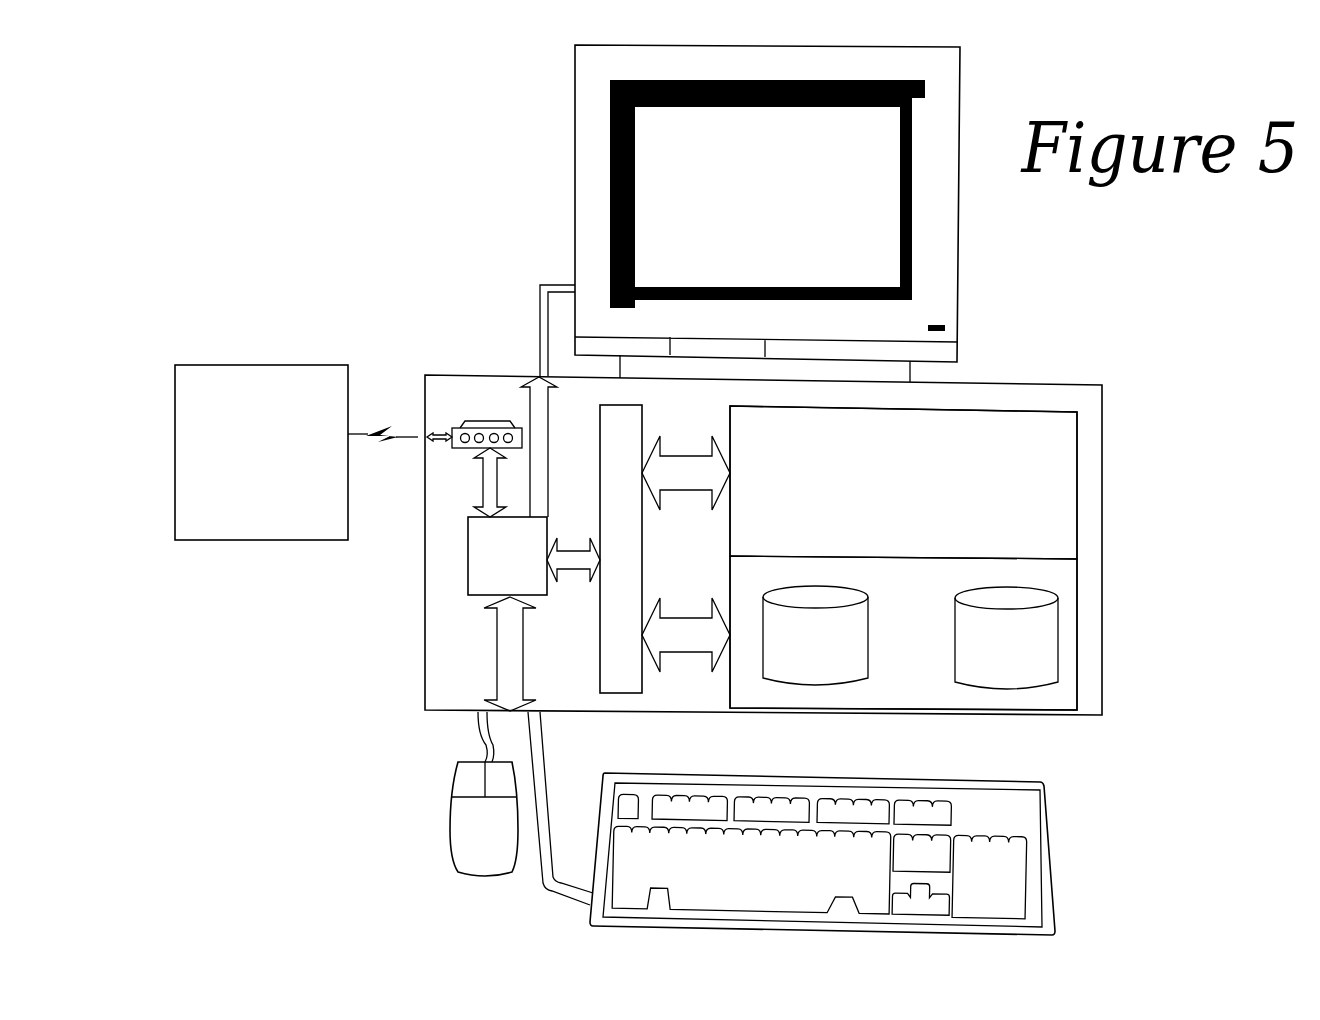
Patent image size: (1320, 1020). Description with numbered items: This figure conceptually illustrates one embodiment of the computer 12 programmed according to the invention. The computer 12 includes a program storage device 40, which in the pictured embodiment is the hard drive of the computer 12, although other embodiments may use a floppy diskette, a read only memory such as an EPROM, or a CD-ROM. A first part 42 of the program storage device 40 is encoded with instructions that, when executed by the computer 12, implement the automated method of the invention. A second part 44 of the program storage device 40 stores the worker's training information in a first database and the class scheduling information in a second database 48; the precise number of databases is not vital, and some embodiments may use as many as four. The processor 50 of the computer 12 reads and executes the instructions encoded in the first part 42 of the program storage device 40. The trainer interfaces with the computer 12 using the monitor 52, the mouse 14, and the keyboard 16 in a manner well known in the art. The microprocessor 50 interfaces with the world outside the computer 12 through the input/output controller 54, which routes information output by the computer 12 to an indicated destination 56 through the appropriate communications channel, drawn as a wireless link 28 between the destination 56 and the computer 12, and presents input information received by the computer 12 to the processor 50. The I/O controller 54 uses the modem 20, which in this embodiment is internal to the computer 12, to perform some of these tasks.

The computer 12 is at (945, 76).
The monitor 52 is at (822, 262).
The indicated destination 56 is at (249, 462).
The wireless communication link 28 is at (490, 476).
The modem 20 is at (488, 427).
The input/output controller 54 is at (494, 567).
The processor 50 is at (608, 560).
The program storage device 40 is at (1080, 430).
The first part of the program storage device 42 is at (1037, 518).
The second part of the program storage device 44 is at (1077, 600).
The second database 48 is at (994, 657).
The mouse 14 is at (470, 826).
The keyboard 16 is at (1027, 811).